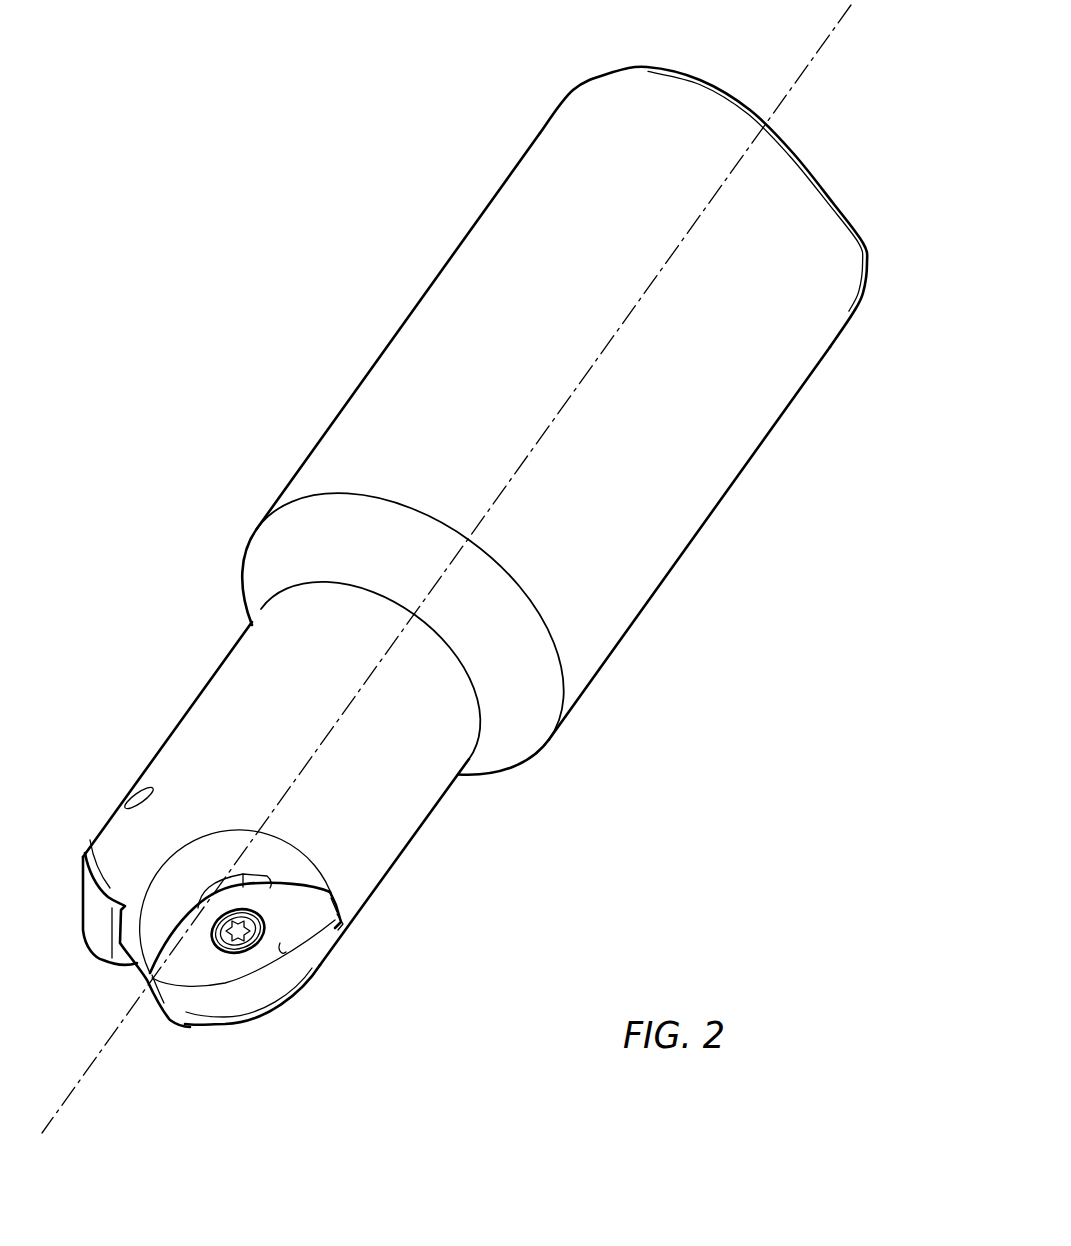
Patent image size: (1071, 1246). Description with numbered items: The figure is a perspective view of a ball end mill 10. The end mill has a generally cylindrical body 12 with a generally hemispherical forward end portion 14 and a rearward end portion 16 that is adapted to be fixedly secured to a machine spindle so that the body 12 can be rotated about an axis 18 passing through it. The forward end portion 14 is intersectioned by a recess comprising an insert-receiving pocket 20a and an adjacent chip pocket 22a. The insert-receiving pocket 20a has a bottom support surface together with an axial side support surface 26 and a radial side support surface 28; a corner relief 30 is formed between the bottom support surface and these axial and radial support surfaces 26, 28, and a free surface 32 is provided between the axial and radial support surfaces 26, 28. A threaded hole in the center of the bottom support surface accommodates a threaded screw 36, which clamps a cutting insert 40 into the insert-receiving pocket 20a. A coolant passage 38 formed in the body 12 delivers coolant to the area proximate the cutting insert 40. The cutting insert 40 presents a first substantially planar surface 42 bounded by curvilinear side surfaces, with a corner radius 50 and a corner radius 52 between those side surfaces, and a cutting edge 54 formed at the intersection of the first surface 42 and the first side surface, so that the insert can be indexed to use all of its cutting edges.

The ball end mill 10 is at (149, 80).
The body 12 is at (442, 584).
The forward end portion 14 is at (249, 841).
The rearward end portion 16 is at (441, 188).
The axis 18 is at (540, 436).
The insert-receiving pocket 20a is at (152, 947).
The chip pocket 22a is at (190, 871).
The axial side support surface 26 is at (151, 930).
The radial side support surface 28 is at (295, 865).
The corner relief 30 is at (342, 926).
The free surface 32 is at (184, 901).
The threaded screw 36 is at (218, 953).
The coolant passage 38 is at (207, 888).
The cutting insert 40 is at (243, 991).
The first substantially planar surface 42 is at (288, 890).
The corner radius 50 is at (333, 898).
The corner radius 52 is at (149, 986).
The cutting edge 54 is at (284, 952).